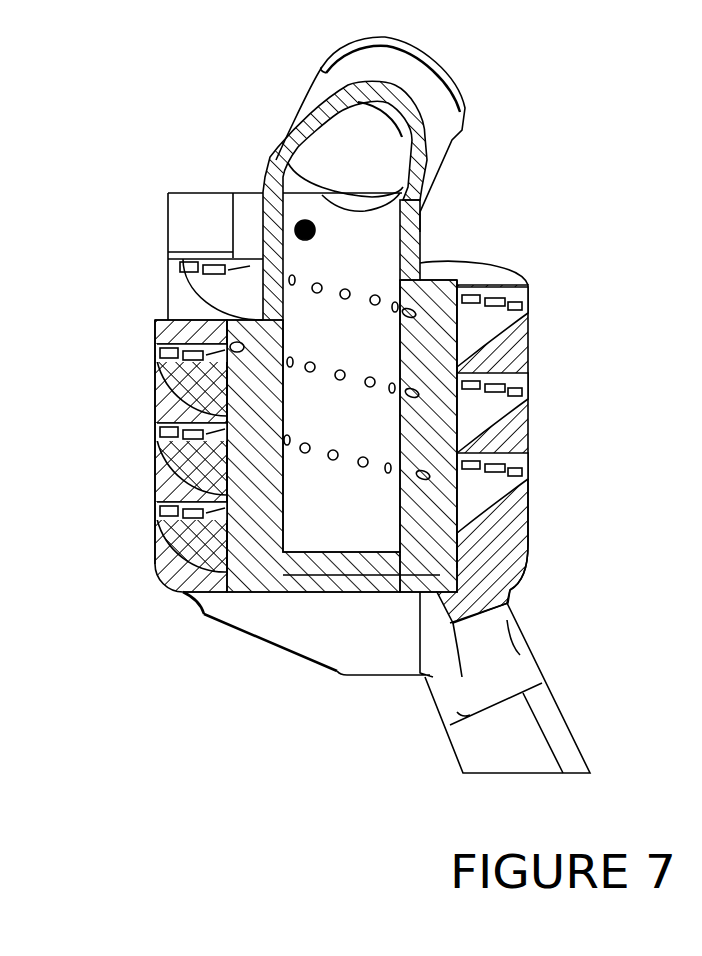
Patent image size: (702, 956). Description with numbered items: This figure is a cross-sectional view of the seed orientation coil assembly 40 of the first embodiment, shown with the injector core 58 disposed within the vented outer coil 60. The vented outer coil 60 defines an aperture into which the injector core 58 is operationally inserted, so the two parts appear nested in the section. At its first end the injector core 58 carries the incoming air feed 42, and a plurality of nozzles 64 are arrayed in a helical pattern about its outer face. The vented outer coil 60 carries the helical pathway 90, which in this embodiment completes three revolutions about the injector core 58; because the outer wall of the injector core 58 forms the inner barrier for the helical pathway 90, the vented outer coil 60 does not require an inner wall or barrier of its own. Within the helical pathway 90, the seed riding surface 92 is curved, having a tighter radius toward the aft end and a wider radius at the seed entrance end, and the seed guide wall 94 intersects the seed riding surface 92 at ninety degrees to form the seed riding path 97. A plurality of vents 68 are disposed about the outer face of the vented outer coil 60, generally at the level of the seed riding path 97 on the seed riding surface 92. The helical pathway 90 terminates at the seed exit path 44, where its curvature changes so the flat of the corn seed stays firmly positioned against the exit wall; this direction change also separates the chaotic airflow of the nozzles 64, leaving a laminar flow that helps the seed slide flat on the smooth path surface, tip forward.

The seed orientation coil assembly 40 is at (599, 145).
The incoming air feed 42 is at (464, 112).
The seed exit path 44 is at (581, 750).
The injector core 58 is at (420, 232).
The vented outer coil 60 is at (528, 347).
The nozzles 64 is at (329, 460).
The vents 68 is at (160, 349).
The helical pathway 90 is at (500, 405).
The seed riding surface 92 is at (487, 495).
The seed guide wall 94 is at (160, 502).
The seed riding path 97 is at (520, 477).